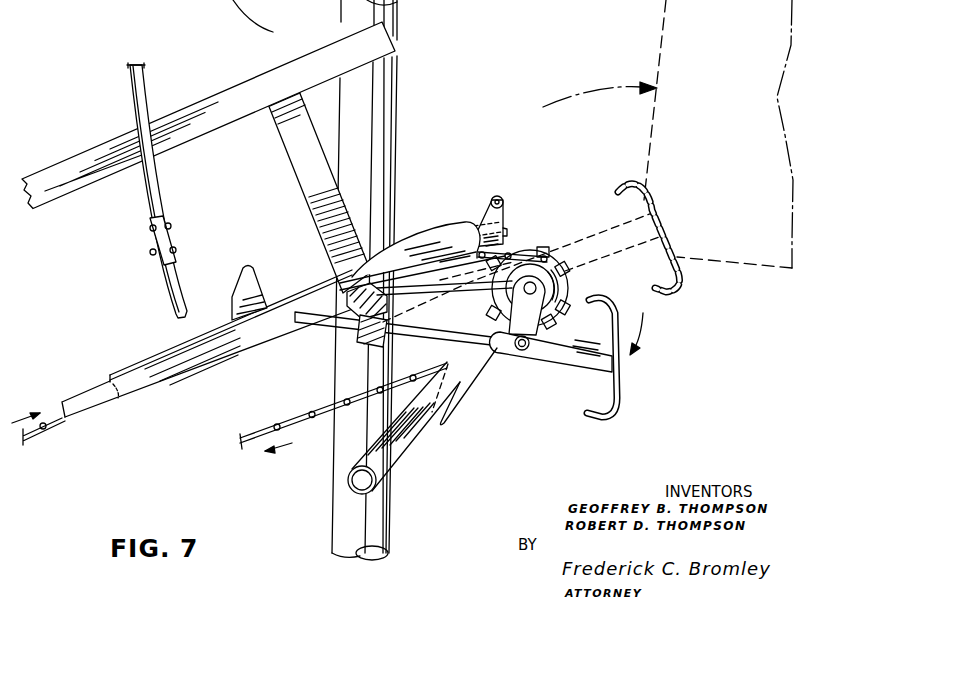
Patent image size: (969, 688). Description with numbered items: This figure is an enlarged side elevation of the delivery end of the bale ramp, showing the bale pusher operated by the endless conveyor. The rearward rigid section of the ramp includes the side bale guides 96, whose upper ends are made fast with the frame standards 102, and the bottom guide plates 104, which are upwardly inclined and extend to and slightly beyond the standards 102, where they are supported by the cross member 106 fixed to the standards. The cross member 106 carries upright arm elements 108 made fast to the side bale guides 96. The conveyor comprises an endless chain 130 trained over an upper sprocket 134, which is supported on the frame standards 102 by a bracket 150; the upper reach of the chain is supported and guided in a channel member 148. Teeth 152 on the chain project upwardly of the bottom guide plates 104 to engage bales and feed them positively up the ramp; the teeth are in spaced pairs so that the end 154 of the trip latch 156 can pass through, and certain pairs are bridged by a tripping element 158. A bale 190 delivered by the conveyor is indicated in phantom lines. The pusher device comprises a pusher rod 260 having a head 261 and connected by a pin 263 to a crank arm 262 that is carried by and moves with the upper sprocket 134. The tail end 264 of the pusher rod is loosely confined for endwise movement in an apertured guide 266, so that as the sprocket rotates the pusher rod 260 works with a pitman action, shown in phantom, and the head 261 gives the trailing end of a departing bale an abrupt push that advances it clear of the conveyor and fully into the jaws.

The side bale guides 96 is at (217, 103).
The frame standards 102 is at (383, 92).
The bottom guide plates 104 is at (140, 362).
The cross member 106 is at (345, 278).
The upright arm elements 108 is at (300, 176).
The endless chain 130 is at (518, 248).
The upper sprocket 134 is at (542, 250).
The channel member 148 is at (88, 395).
The bracket 150 is at (420, 430).
The teeth 152 is at (247, 265).
The end of trip latch 154 is at (180, 283).
The trip latch 156 is at (160, 193).
The tripping element 158 is at (496, 196).
The bale 190 is at (663, 16).
The pusher rod 260 is at (564, 362).
The head 261 is at (622, 378).
The crank arm 262 is at (522, 318).
The pin 263 is at (522, 352).
The tail end 264 is at (322, 327).
The apertured guide 266 is at (358, 340).